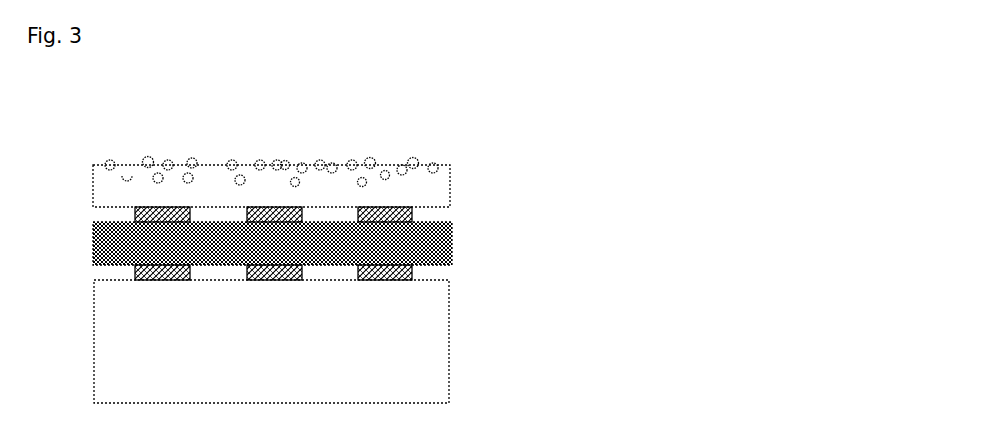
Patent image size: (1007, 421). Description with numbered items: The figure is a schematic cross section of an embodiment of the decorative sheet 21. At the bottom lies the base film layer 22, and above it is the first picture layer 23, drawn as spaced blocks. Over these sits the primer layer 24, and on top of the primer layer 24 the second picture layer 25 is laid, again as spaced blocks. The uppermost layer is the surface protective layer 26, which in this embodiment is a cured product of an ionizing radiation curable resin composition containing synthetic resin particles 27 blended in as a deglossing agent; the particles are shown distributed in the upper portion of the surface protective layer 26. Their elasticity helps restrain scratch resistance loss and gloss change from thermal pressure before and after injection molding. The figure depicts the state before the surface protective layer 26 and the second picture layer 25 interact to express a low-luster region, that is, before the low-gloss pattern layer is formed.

The decorative sheet 21 is at (360, 113).
The base film layer 22 is at (450, 353).
The first picture layer 23 is at (412, 272).
The primer layer 24 is at (452, 243).
The second picture layer 25 is at (412, 214).
The surface protective layer 26 is at (450, 186).
The synthetic resin particles 27 is at (416, 162).